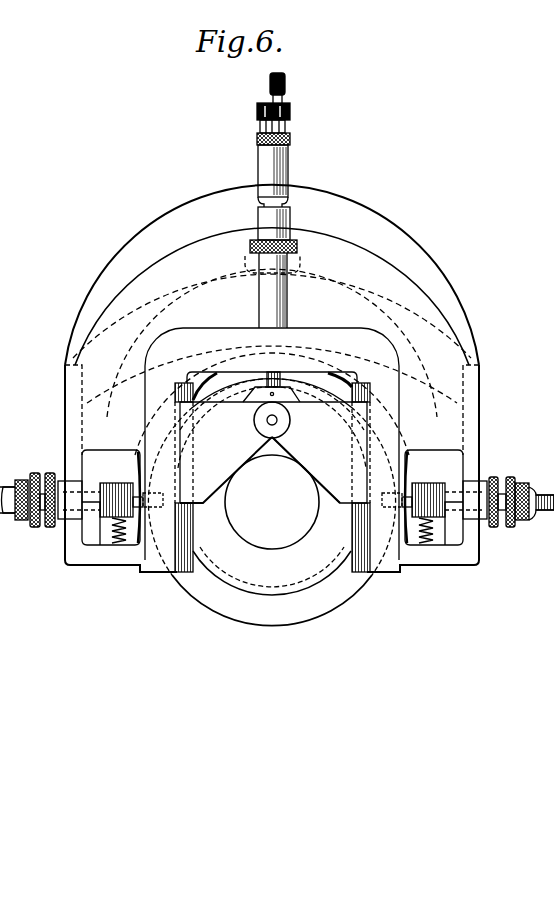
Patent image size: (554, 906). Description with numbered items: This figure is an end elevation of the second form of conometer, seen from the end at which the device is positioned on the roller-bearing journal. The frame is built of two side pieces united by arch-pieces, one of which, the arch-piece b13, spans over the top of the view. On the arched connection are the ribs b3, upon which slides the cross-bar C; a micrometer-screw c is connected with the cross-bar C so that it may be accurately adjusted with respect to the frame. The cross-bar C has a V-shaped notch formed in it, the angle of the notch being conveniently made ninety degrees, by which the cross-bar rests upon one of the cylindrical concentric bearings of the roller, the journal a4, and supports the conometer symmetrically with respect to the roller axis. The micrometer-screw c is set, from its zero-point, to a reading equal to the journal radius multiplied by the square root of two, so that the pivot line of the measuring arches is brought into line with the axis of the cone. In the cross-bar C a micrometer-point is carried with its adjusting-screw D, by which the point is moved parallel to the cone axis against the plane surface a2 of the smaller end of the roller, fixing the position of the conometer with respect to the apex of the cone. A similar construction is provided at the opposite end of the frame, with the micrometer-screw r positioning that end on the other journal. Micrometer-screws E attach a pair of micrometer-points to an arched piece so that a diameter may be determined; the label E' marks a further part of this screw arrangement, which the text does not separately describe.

The arch-piece b13 is at (342, 337).
The micrometer-screw r is at (291, 124).
The micrometer-screw c is at (281, 171).
The ribs b3 is at (181, 565).
The plane end a2 is at (271, 502).
The cylindrical concentric bearing a4 is at (272, 502).
The micrometer-screw D is at (226, 452).
The cross-bar C is at (319, 452).
The micrometer-screws E is at (278, 494).
The clamp screw shaft E' is at (260, 522).